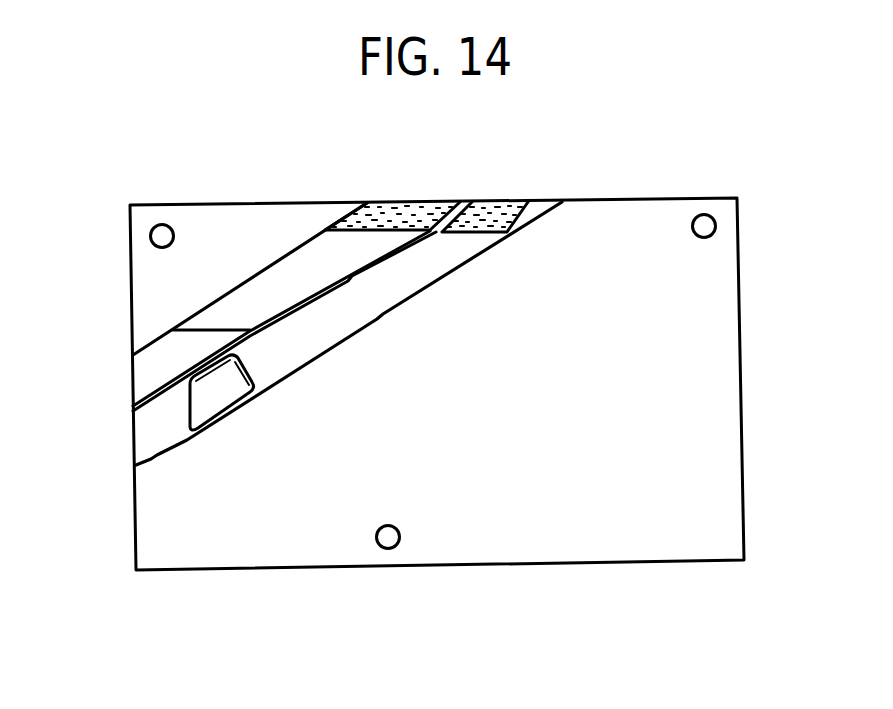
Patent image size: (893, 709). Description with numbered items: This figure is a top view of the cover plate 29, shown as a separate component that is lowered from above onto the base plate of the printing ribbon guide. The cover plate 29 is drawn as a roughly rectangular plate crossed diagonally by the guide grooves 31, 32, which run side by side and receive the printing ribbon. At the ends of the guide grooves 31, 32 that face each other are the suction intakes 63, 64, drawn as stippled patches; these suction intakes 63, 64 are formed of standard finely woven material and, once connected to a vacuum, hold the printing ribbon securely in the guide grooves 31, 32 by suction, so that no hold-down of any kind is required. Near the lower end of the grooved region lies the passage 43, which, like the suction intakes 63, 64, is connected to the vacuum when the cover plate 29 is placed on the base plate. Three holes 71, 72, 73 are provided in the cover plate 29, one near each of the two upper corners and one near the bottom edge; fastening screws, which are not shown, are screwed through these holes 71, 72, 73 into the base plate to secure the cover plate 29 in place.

The cover plate 29 is at (704, 413).
The guide groove 31 is at (330, 328).
The guide groove 32 is at (268, 288).
The passage 43 is at (205, 405).
The suction intake 63 is at (366, 205).
The suction intake 64 is at (480, 220).
The hole 71 is at (160, 236).
The hole 72 is at (388, 540).
The hole 73 is at (704, 226).